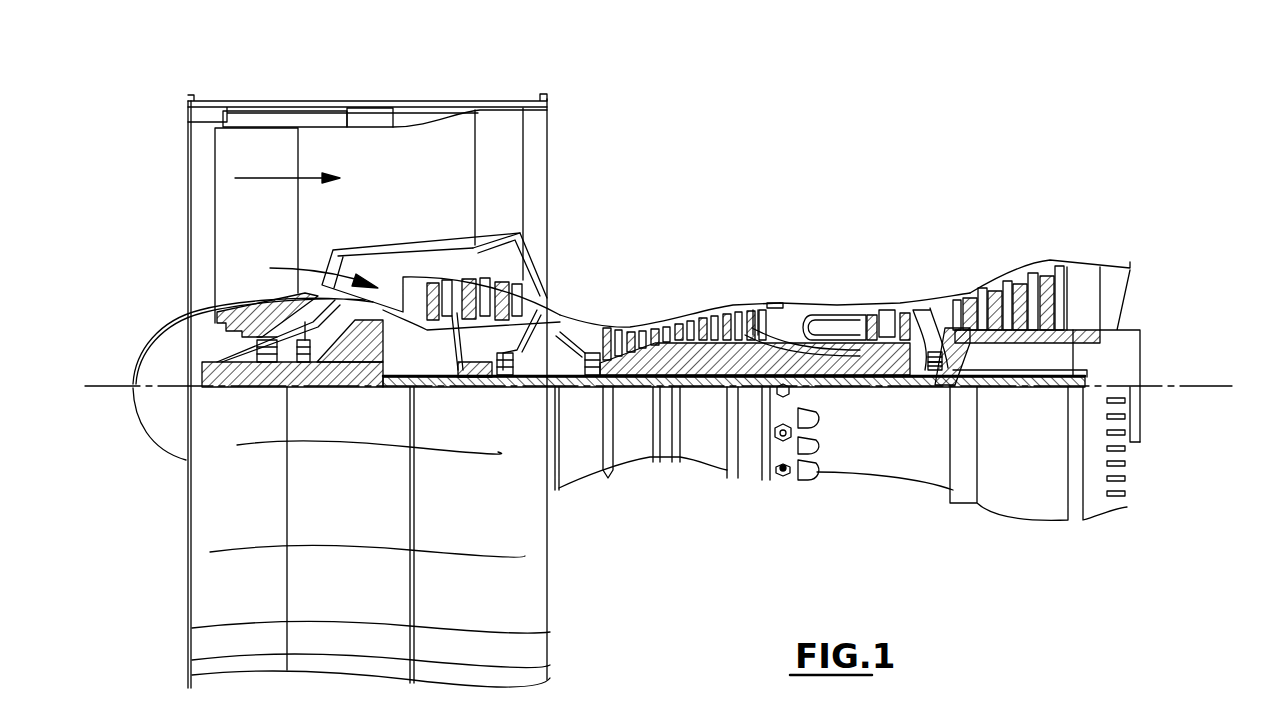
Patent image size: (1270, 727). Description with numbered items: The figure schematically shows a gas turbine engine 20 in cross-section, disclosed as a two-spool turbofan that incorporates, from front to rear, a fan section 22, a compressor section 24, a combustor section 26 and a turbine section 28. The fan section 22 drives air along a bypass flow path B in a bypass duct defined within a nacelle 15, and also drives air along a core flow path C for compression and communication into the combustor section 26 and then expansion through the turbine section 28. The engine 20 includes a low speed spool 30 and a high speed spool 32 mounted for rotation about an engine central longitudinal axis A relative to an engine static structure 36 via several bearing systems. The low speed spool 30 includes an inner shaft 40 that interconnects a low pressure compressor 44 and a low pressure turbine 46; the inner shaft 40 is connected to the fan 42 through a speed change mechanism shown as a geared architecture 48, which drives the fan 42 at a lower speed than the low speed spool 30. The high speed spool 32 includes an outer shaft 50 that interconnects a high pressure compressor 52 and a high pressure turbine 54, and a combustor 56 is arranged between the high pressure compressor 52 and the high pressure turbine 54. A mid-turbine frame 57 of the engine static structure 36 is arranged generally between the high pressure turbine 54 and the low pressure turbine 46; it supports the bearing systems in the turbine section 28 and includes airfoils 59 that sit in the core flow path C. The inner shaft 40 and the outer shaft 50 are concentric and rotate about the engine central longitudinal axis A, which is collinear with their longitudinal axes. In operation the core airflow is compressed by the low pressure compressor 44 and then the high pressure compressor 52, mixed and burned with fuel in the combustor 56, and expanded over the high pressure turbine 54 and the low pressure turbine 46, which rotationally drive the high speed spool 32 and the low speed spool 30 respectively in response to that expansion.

The nacelle 15 is at (368, 110).
The gas turbine engine 20 is at (838, 146).
The fan section 22 is at (295, 92).
The compressor section 24 is at (602, 284).
The combustor section 26 is at (820, 272).
The turbine section 28 is at (970, 234).
The low speed spool 30 is at (708, 402).
The high speed spool 32 is at (750, 335).
The engine static structure 36 is at (748, 487).
The inner shaft 40 is at (567, 388).
The fan 42 is at (241, 232).
The low pressure compressor 44 is at (462, 308).
The low pressure turbine 46 is at (1016, 262).
The geared architecture 48 is at (381, 380).
The outer shaft 50 is at (826, 380).
The high pressure compressor 52 is at (666, 327).
The high pressure turbine 54 is at (888, 310).
The combustor 56 is at (824, 325).
The mid-turbine frame 57 is at (935, 292).
The airfoils 59 is at (946, 333).
The engine central longitudinal axis A is at (1222, 386).
The bypass flow path B is at (270, 178).
The core flow path C is at (313, 271).